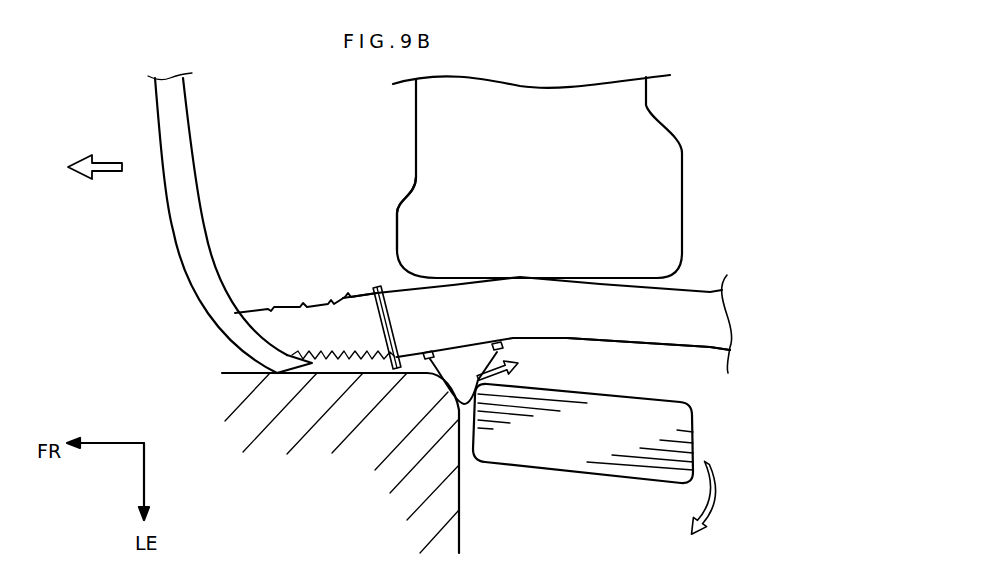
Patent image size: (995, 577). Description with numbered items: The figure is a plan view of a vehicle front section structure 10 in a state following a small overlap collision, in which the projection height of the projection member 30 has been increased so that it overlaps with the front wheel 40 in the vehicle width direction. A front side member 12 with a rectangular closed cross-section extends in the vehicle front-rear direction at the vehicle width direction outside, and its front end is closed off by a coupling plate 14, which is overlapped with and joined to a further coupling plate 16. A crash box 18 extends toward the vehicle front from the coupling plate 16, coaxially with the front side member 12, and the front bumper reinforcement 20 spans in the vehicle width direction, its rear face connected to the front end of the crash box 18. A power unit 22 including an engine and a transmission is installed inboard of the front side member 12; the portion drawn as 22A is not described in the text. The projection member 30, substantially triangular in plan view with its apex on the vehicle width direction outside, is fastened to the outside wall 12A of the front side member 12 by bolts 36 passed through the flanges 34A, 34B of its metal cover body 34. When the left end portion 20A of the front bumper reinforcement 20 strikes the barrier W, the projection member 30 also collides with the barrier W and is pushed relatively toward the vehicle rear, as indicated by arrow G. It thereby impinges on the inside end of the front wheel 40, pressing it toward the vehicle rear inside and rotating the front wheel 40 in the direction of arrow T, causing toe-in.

The vehicle front section structure 10 is at (480, 480).
The front side member 12 is at (699, 280).
The outside wall 12A is at (690, 347).
The coupling plate 14 is at (388, 287).
The coupling plate 16 is at (372, 288).
The crash box 18 is at (287, 312).
The front bumper reinforcement 20 is at (166, 206).
The left end portion 20A is at (293, 377).
The power unit 22 is at (408, 124).
The lower portion of body member 22A is at (395, 227).
The projection member 30 is at (455, 419).
The cover body 34 is at (452, 395).
The flange 34A is at (414, 352).
The flange 34B is at (512, 340).
The bolt 36 is at (497, 353).
The front wheel 40 is at (570, 465).
The arrow G is at (480, 373).
The barrier W is at (237, 371).
The arrow T is at (715, 497).